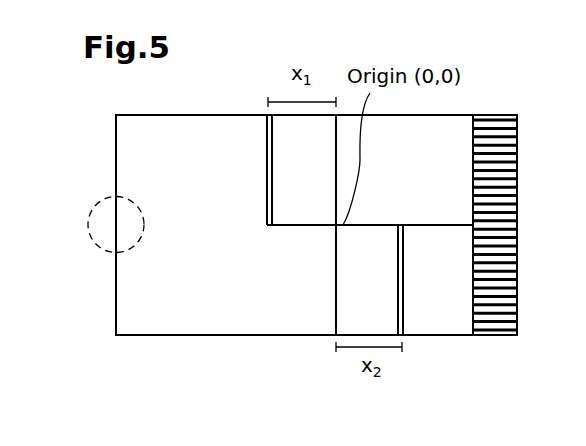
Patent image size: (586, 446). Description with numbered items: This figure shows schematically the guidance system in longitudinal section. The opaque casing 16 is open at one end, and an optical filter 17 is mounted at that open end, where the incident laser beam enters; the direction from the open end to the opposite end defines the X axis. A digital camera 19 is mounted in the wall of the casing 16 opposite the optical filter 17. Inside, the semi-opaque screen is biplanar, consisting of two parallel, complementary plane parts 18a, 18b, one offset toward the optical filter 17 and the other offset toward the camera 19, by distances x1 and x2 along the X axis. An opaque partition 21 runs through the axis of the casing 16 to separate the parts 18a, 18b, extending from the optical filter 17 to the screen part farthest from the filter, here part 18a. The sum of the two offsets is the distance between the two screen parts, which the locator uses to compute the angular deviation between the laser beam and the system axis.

The opaque casing 16 is at (217, 335).
The optical filter 17 is at (494, 337).
The plane surface of the screen 18a is at (266, 145).
The plane surface of the screen 18b is at (403, 313).
The digital camera 19 is at (87, 224).
The opaque partition 21 is at (451, 225).